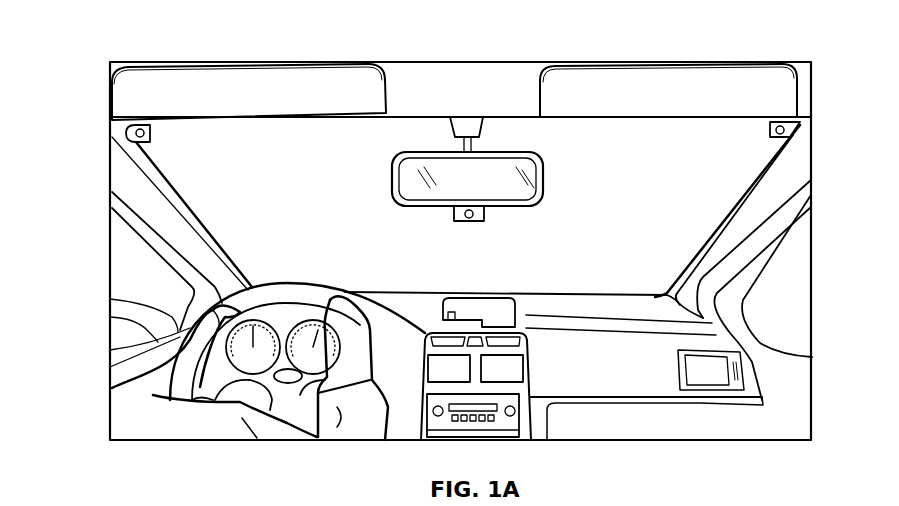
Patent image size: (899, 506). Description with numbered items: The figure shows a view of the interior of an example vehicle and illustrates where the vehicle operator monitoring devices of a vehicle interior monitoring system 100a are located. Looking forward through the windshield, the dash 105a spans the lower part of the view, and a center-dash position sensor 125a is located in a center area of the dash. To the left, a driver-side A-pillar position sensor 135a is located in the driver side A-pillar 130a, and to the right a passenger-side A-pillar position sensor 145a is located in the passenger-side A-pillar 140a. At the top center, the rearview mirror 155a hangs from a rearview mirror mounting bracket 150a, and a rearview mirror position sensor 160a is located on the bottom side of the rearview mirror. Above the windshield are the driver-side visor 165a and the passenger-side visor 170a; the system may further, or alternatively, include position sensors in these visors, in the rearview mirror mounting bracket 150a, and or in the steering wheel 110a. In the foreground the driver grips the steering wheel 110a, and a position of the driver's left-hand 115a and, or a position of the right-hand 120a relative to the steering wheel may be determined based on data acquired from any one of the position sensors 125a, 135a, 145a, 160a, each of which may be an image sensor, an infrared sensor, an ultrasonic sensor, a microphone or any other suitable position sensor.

The vehicle interior monitoring system 100a is at (238, 42).
The dashboard 105a is at (583, 387).
The steering wheel 110a is at (263, 282).
The left-hand 115a is at (195, 345).
The right-hand 120a is at (356, 315).
The center-dash position sensor 125a is at (497, 305).
The driver side A-pillar 130a is at (133, 186).
The driver-side A-pillar position sensor 135a is at (128, 130).
The passenger-side A-pillar 140a is at (800, 203).
The passenger-side A-pillar position sensor 145a is at (787, 127).
The rearview mirror mounting bracket 150a is at (463, 125).
The rearview mirror 155a is at (509, 167).
The rearview mirror position sensor 160a is at (478, 222).
The driver-side visor 165a is at (311, 91).
The passenger-side visor 170a is at (668, 90).